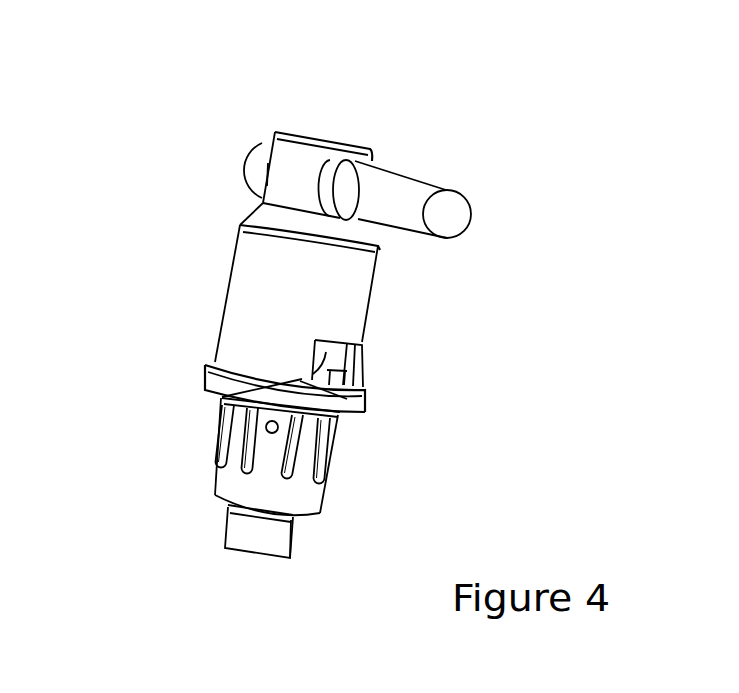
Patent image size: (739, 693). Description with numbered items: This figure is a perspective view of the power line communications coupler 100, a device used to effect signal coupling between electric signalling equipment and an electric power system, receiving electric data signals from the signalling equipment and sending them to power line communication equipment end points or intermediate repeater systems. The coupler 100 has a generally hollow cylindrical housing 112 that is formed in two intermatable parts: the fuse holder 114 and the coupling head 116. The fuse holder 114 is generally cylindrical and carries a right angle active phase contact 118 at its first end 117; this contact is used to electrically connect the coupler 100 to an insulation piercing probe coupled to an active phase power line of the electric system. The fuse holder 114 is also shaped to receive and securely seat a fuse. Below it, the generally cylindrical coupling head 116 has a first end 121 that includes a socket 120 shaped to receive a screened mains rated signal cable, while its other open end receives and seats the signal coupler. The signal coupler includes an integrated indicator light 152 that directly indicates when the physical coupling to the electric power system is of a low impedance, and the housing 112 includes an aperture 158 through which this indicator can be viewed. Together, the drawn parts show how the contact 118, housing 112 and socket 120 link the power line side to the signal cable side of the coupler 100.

The power line communications coupler 100 is at (361, 343).
The housing 112 is at (236, 239).
The fuse holder 114 is at (253, 342).
The coupling head 116 is at (230, 488).
The first end 117 is at (305, 157).
The right angle active phase contact 118 is at (413, 178).
The socket 120 is at (241, 592).
The first end 121 is at (282, 535).
The integrated indicator light 152 is at (342, 358).
The aperture 158 is at (226, 397).